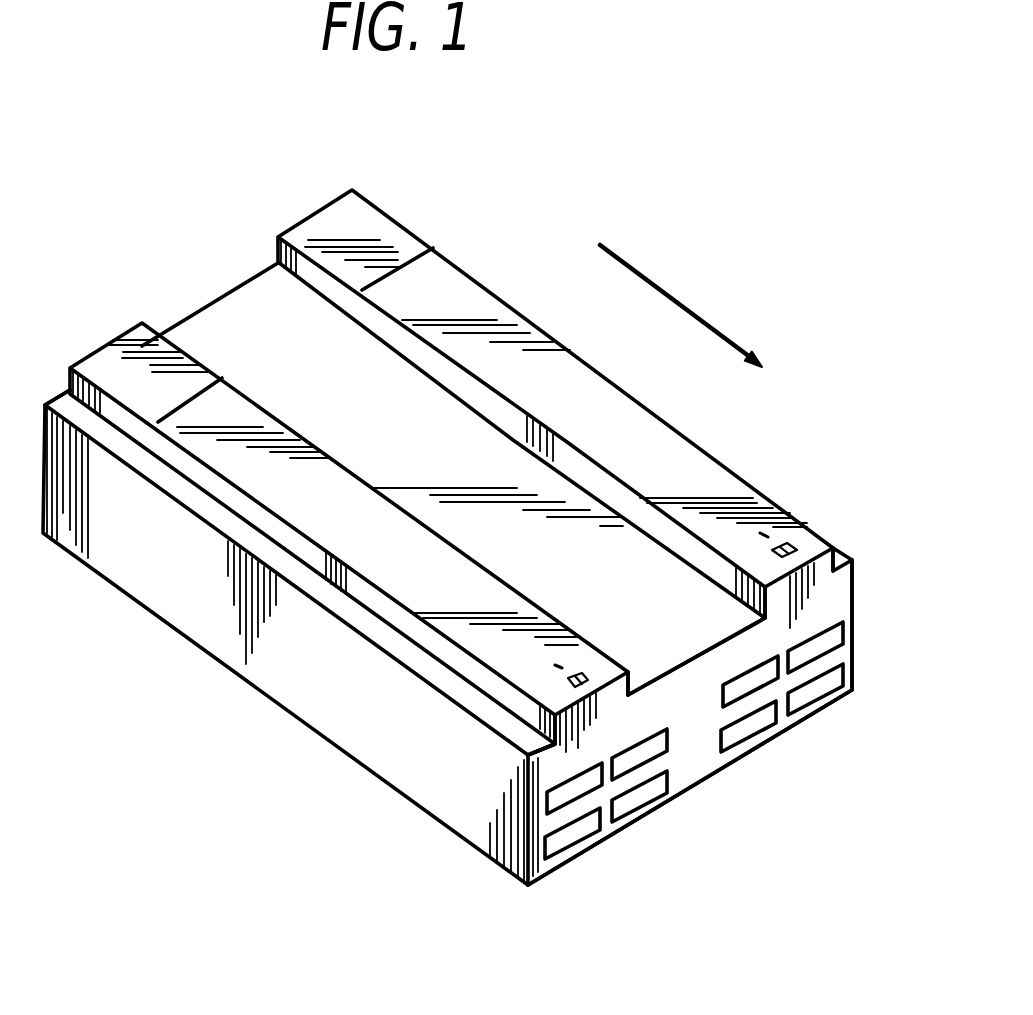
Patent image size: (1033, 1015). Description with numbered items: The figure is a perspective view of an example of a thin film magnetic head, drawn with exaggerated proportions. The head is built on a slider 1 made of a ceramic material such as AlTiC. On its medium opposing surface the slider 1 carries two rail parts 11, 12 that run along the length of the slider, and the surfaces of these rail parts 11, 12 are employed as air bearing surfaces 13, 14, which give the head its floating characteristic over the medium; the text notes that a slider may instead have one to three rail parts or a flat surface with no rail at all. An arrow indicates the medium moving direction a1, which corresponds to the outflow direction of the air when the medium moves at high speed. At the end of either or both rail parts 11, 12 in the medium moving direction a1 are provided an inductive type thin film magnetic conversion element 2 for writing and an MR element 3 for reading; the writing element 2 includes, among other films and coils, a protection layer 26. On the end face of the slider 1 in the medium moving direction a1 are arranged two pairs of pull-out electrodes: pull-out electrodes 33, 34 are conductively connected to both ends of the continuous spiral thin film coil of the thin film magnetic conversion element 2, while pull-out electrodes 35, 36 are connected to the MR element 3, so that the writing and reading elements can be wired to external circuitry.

The slider 1 is at (227, 647).
The rail part 11 is at (537, 722).
The rail part 12 is at (845, 556).
The air bearing surface 13 is at (330, 497).
The air bearing surface 14 is at (465, 307).
The inductive type thin film magnetic conversion element 2 is at (797, 548).
The MR element 3 is at (765, 533).
The protection layer 26 is at (846, 592).
The pull-out electrode 33 is at (898, 683).
The pull-out electrode 34 is at (860, 713).
The pull-out electrode 35 is at (816, 731).
The pull-out electrode 36 is at (779, 761).
The medium moving direction a1 is at (670, 296).